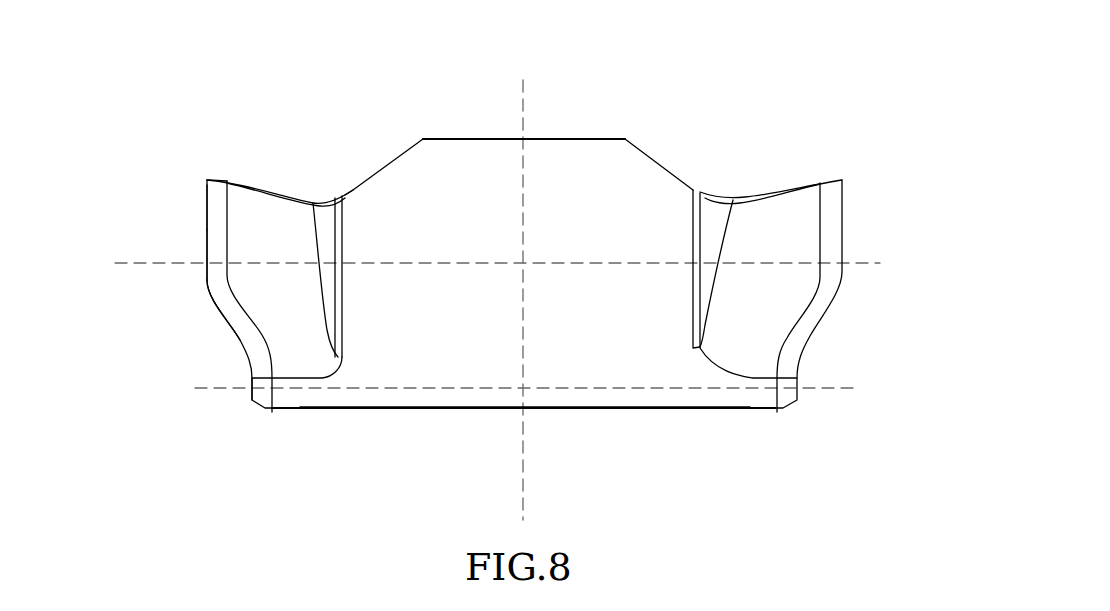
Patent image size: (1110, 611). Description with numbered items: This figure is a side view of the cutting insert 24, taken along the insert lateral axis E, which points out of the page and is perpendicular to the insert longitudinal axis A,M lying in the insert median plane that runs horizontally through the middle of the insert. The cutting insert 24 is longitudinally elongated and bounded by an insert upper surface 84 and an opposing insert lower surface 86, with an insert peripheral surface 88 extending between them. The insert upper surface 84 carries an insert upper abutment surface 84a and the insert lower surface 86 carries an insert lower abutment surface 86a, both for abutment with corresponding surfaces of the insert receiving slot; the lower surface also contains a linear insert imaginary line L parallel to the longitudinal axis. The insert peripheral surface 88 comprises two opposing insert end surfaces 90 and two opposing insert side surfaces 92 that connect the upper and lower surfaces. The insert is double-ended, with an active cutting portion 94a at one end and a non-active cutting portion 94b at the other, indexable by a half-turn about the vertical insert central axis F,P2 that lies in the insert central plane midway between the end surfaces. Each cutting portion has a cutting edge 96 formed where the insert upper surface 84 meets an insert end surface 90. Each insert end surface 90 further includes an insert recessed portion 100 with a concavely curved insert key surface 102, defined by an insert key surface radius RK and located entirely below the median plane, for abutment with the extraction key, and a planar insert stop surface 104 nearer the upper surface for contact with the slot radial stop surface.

The cutting insert 24 is at (272, 92).
The insert upper surface 84 is at (466, 135).
The insert upper abutment surface 84a is at (603, 138).
The insert lower surface 86 is at (600, 424).
The insert lower abutment surface 86a is at (680, 407).
The insert peripheral surface 88 is at (420, 344).
The insert end surface 90 is at (207, 233).
The insert side surface 92 is at (618, 183).
The cutting portion 94a is at (786, 150).
The cutting portion 94b is at (244, 145).
The cutting edge 96 is at (207, 180).
The insert recessed portion 100 is at (228, 372).
The insert key surface 102 is at (220, 312).
The insert stop surface 104 is at (207, 203).
The insert key surface radius RK is at (241, 348).
The insert lateral axis E is at (524, 262).
The insert imaginary line L is at (840, 388).
The insert longitudinal axis and insert median plane A,M is at (880, 263).
The insert central axis and insert central plane F,P2 is at (523, 106).